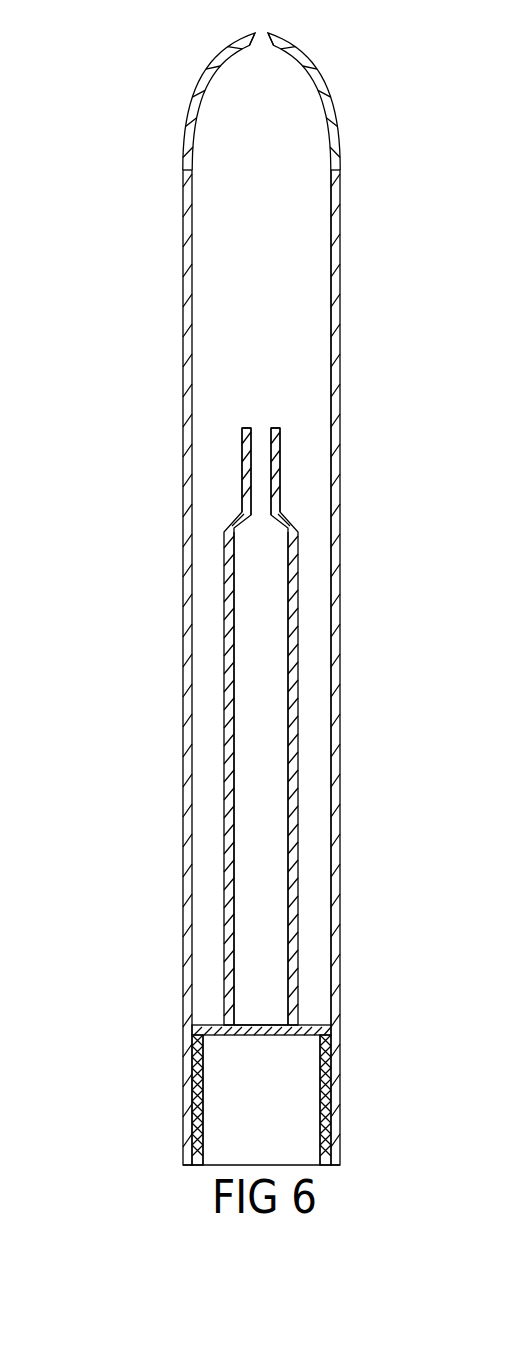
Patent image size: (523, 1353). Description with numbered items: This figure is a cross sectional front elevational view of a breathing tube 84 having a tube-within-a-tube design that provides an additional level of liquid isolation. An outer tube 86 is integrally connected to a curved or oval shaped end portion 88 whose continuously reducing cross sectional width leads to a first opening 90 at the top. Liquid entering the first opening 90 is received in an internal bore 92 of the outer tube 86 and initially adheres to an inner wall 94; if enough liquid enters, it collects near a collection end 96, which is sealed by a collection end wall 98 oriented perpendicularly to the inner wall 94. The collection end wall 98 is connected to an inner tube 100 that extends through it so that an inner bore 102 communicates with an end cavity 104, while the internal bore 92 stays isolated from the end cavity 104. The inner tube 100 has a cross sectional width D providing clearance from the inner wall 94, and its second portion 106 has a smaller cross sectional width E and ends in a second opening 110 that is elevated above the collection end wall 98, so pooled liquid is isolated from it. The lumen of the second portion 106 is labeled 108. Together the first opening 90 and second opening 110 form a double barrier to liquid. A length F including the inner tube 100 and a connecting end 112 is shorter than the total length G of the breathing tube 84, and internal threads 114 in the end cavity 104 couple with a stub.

The breathing tube 84 is at (417, 334).
The outer tube 86 is at (342, 745).
The curved or oval shaped end portion 88 is at (326, 95).
The first opening 90 is at (263, 32).
The internal bore 92 is at (315, 326).
The inner wall 94 is at (327, 235).
The collection end 96 is at (305, 1020).
The collection end wall 98 is at (322, 1032).
The inner tube 100 is at (296, 662).
The inner bore 102 is at (270, 693).
The end cavity 104 is at (305, 1080).
The second portion 106 is at (280, 437).
The neck lumen 108 is at (262, 454).
The second opening 110 is at (262, 427).
The connecting end 112 is at (337, 1130).
The internal threads 114 is at (327, 1097).
The cross sectional width D is at (212, 573).
The cross sectional width E is at (213, 471).
The length F is at (105, 428).
The total length G is at (53, 32).